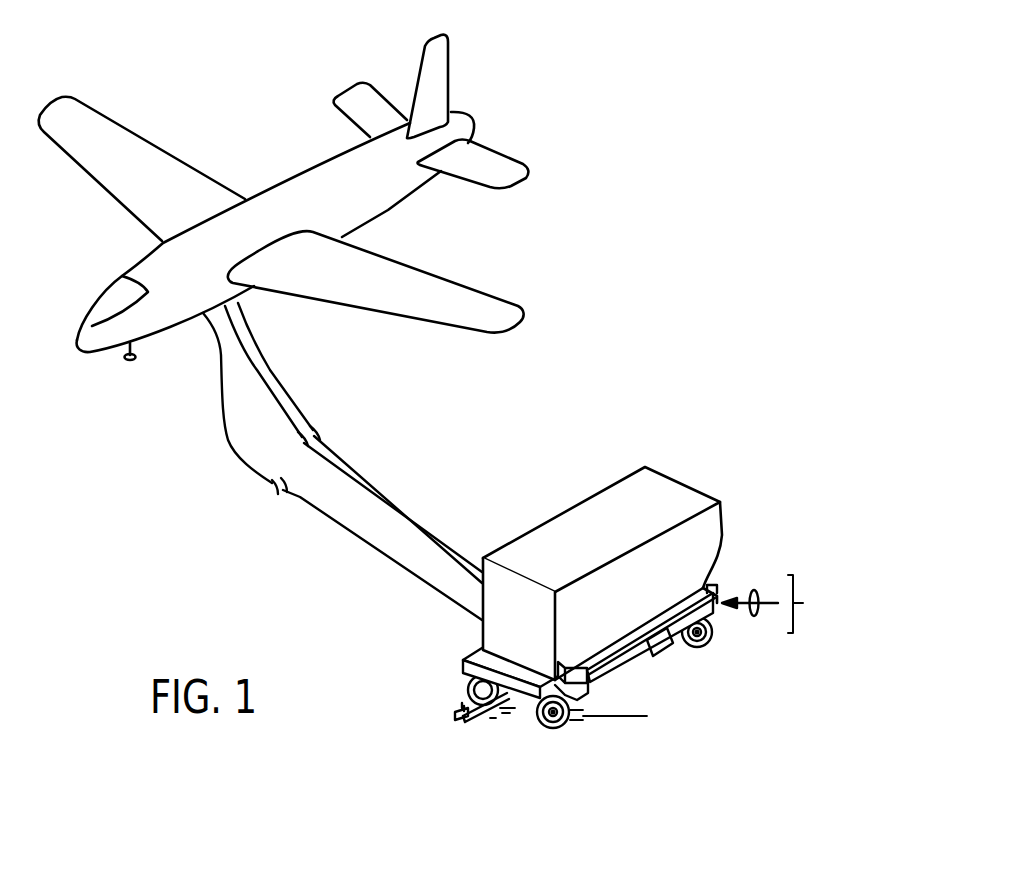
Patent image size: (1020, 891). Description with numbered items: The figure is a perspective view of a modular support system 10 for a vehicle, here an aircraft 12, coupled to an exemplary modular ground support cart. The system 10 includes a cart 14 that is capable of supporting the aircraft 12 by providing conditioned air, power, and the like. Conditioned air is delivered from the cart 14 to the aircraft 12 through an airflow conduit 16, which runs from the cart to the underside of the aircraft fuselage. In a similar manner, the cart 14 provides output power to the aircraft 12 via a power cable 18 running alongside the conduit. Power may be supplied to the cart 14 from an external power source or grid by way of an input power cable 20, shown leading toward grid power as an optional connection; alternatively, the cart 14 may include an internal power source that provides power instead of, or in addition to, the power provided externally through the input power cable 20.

The modular support system 10 is at (565, 738).
The aircraft 12 is at (310, 172).
The cart 14 is at (708, 525).
The airflow conduit 16 is at (417, 530).
The power cable 18 is at (393, 558).
The input power cable 20 is at (755, 616).